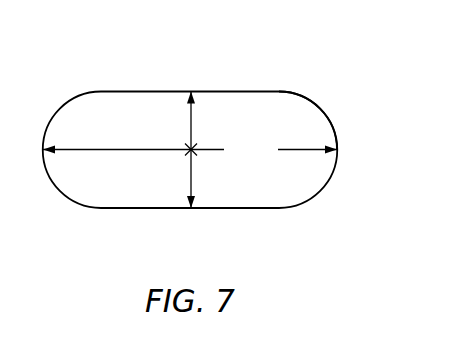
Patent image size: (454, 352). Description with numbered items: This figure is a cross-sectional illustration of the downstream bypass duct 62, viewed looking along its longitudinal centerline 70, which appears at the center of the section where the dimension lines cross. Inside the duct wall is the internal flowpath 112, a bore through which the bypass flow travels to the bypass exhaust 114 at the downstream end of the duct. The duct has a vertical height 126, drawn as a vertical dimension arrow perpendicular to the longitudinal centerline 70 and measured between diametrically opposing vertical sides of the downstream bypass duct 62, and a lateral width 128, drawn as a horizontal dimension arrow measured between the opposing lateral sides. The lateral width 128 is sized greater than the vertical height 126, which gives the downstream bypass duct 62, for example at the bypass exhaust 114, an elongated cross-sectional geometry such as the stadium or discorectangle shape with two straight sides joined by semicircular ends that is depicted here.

The downstream bypass duct 62 is at (327, 94).
The longitudinal centerline 70 is at (178, 151).
The internal flowpath 112 is at (143, 137).
The bypass exhaust 114 is at (332, 123).
The vertical height 126 is at (192, 123).
The lateral width 128 is at (190, 150).